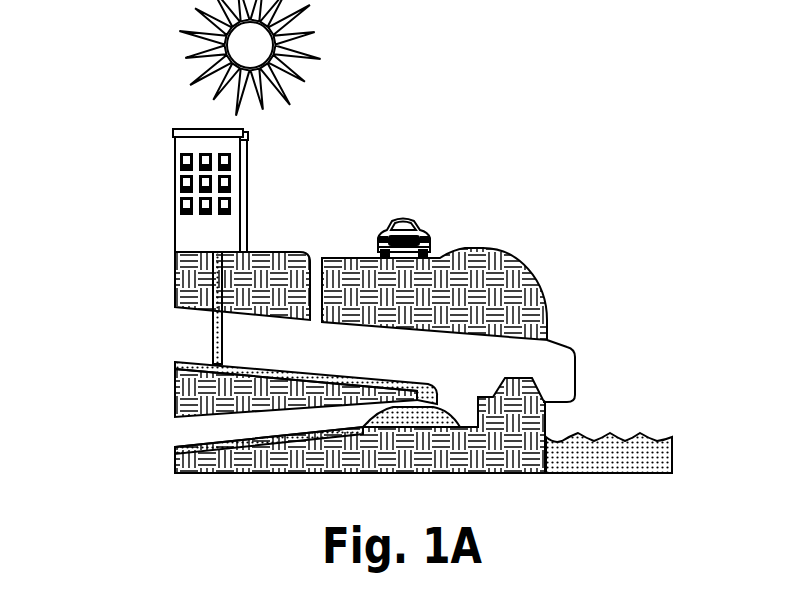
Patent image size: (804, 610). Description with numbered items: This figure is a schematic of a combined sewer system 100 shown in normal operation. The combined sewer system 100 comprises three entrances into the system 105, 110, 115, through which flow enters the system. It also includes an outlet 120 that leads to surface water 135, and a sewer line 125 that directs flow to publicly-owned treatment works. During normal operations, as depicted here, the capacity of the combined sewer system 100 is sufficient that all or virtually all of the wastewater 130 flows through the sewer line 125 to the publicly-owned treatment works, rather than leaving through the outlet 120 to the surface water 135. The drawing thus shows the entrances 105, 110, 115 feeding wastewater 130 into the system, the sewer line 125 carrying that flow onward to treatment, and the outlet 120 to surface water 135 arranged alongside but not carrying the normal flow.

The combined sewer system 100 is at (386, 236).
The entrance into the system 105 is at (222, 278).
The entrance into the system 110 is at (318, 265).
The entrance into the system 115 is at (425, 343).
The outlet 120 is at (568, 362).
The sewer line 125 is at (182, 432).
The wastewater 130 is at (433, 387).
The surface water 135 is at (620, 445).